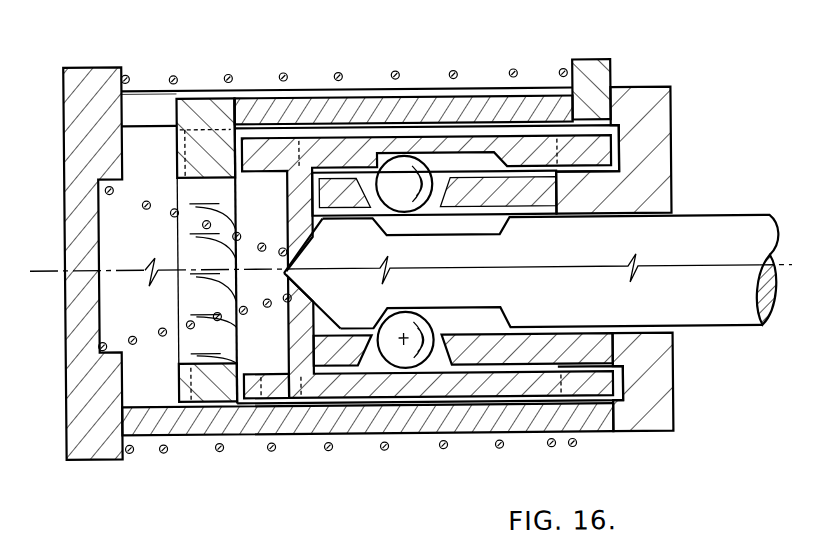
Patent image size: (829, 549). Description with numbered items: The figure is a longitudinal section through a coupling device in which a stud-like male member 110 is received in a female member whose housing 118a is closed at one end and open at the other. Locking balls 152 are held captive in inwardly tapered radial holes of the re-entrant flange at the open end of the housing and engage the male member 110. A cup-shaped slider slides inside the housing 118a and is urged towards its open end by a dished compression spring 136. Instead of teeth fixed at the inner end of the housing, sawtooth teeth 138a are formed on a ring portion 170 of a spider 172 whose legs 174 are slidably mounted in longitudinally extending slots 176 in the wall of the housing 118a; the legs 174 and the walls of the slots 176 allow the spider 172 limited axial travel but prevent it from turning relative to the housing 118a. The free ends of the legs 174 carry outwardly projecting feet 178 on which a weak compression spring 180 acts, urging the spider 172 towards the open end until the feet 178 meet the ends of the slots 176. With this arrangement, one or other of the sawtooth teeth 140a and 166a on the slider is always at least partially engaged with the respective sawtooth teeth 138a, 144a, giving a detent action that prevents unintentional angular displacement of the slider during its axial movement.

The stud-like male member 110 is at (712, 303).
The housing 118a is at (88, 131).
The dished compression spring 136 is at (145, 210).
The sawtooth teeth 138a is at (206, 163).
The sawtooth teeth 140a is at (274, 388).
The sawtooth teeth 144a is at (612, 398).
The locking ball 152 is at (412, 177).
The sawtooth teeth 166a is at (598, 152).
The ring portion 170 is at (208, 383).
The spider 172 is at (325, 92).
The legs 174 is at (369, 112).
The longitudinally extending slots 176 is at (154, 108).
The outwardly projecting feet 178 is at (594, 73).
The weak compression spring 180 is at (516, 71).